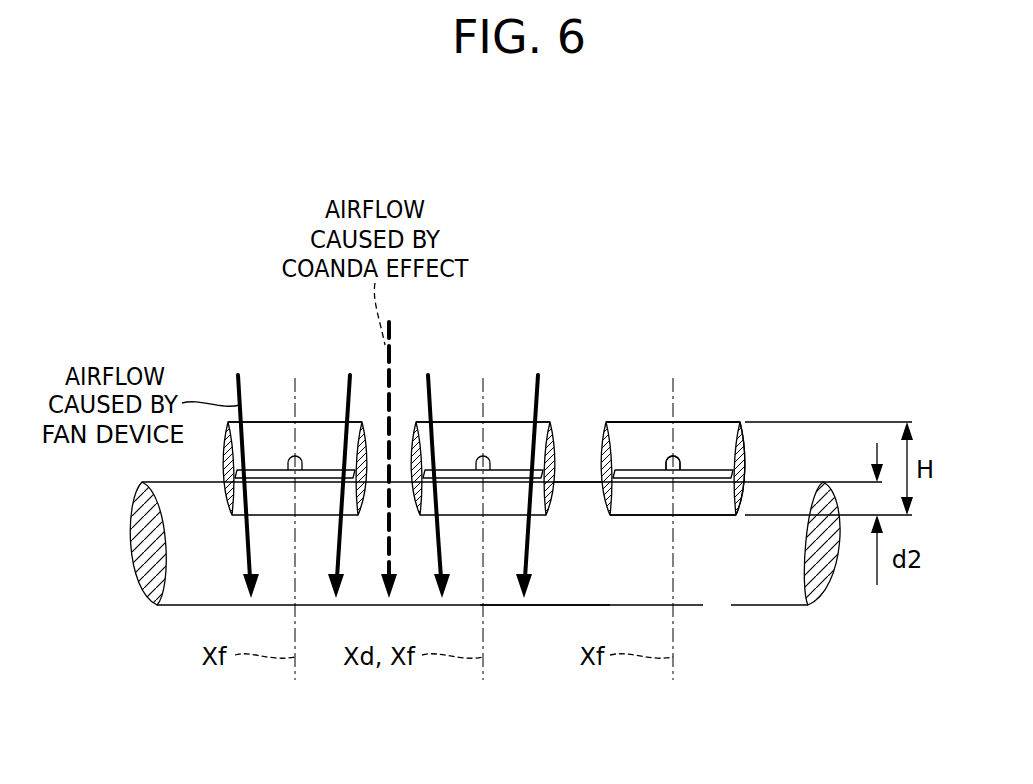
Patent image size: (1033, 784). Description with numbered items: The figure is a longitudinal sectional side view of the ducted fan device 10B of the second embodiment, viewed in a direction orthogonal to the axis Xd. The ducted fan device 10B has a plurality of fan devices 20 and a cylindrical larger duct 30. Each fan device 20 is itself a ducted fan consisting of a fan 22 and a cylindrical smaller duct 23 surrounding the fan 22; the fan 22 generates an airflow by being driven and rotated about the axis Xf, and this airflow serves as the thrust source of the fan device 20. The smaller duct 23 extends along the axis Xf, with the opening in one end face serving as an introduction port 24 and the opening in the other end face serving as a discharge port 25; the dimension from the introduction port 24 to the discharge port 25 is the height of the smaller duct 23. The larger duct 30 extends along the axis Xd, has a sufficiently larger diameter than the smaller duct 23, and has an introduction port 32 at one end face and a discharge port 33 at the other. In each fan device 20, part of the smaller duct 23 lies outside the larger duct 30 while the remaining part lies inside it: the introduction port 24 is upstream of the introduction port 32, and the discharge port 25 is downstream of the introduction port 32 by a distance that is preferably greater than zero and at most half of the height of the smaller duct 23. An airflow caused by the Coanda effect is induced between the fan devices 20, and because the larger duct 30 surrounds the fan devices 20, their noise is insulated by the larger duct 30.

The ducted fan device 10B is at (508, 294).
The fan device 20 is at (269, 432).
The fan 22 is at (640, 480).
The smaller duct 23 is at (741, 424).
The introduction port 24 is at (712, 404).
The discharge port 25 is at (712, 533).
The larger duct 30 is at (130, 550).
The introduction port 32 is at (577, 462).
The discharge port 33 is at (543, 623).